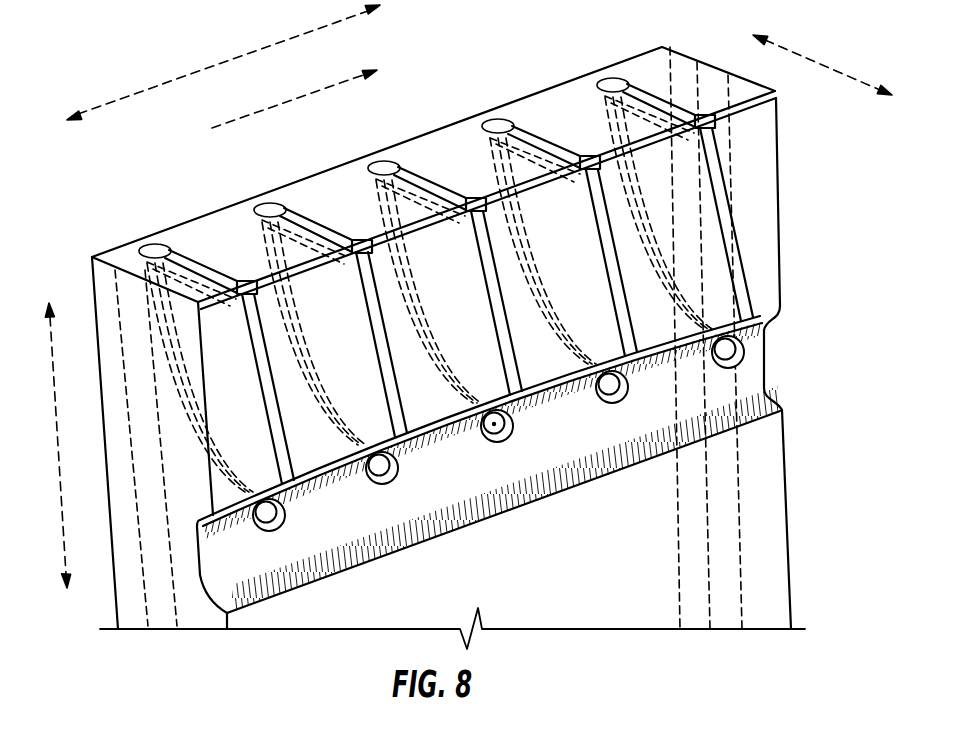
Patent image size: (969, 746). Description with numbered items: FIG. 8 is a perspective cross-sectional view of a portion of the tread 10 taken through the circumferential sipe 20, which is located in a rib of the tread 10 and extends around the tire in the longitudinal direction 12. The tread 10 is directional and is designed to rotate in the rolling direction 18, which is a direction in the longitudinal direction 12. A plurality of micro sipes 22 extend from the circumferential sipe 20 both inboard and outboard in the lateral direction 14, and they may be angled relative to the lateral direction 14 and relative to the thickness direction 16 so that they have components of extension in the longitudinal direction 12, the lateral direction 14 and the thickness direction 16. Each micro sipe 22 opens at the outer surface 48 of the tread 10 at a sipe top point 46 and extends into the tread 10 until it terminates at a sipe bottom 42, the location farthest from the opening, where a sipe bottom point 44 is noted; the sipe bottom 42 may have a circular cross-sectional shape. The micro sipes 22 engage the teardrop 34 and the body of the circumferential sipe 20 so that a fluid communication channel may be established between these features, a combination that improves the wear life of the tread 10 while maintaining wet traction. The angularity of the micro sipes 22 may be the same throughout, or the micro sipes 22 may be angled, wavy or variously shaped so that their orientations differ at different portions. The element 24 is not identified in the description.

The tread 10 is at (552, 102).
The longitudinal direction 12 is at (228, 62).
The lateral direction 14 is at (823, 63).
The thickness direction 16 is at (60, 448).
The rolling direction 18 is at (327, 87).
The circumferential sipe 20 is at (762, 393).
The micro sipes 22 is at (646, 95).
The inlet opening 24 is at (613, 80).
The teardrop 34 is at (220, 580).
The sipe bottom 42 is at (492, 442).
The sipe bottom point 44 is at (498, 425).
The sipe top point 46 is at (439, 186).
The outer surface 48 is at (198, 236).